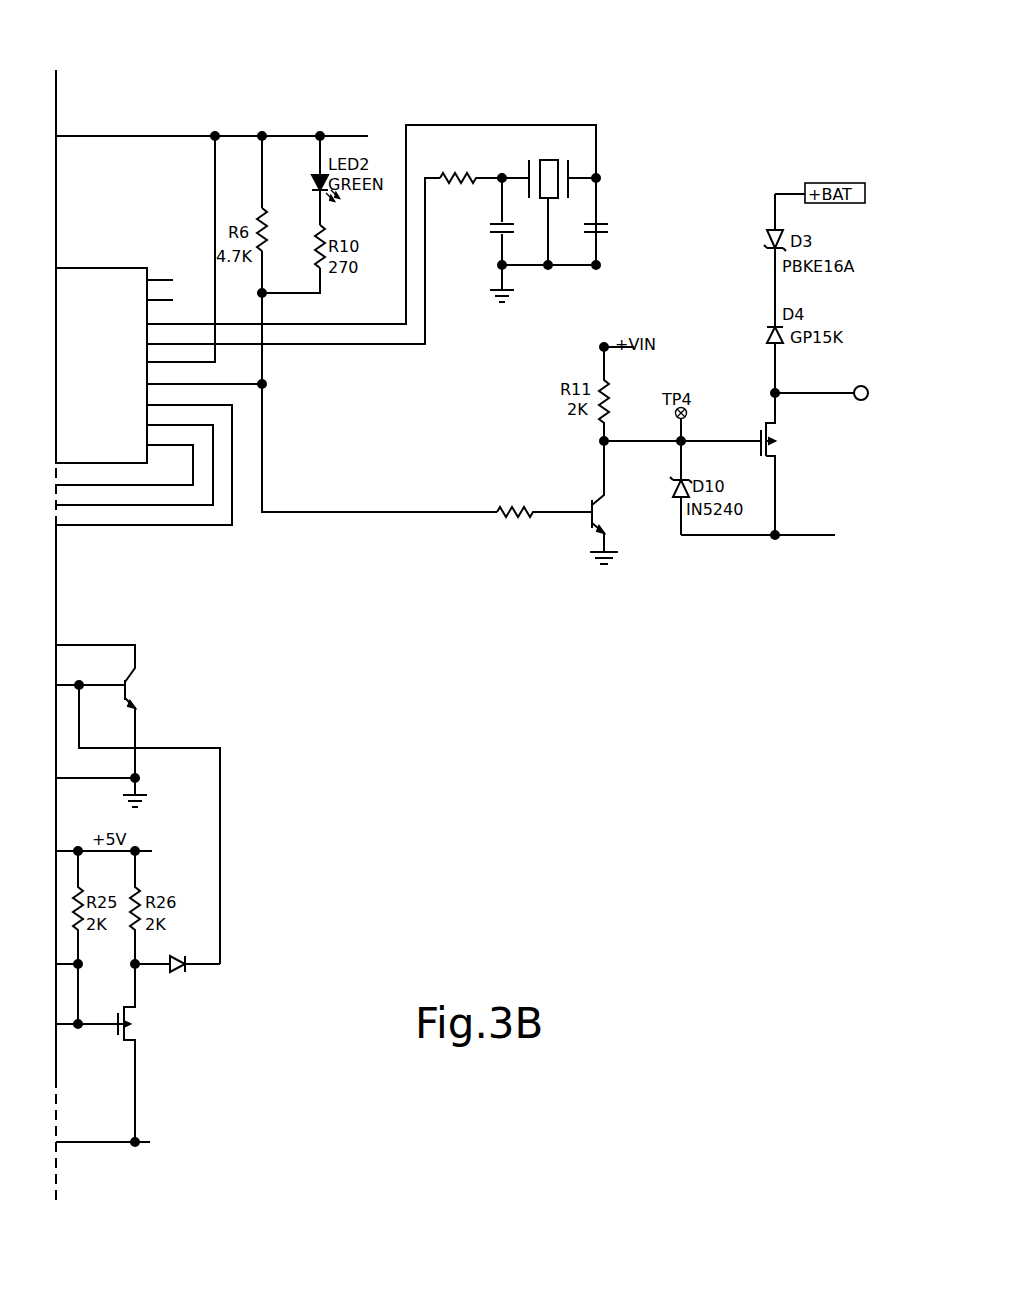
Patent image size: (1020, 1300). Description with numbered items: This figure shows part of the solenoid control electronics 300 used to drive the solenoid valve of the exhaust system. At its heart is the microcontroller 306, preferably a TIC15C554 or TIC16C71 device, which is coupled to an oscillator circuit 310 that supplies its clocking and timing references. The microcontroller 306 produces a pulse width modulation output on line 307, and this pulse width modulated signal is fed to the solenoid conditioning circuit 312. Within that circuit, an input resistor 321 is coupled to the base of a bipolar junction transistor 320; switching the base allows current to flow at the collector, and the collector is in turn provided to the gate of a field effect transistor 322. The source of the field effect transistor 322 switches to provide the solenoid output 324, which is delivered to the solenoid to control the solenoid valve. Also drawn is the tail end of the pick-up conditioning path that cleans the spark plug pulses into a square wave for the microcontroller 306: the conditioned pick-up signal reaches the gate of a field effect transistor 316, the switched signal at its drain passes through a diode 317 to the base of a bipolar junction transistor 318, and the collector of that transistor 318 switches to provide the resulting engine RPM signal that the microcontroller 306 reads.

The solenoid control electronics 300 is at (460, 66).
The microcontroller 306 is at (88, 474).
The pulse width modulation output line 307 is at (190, 384).
The oscillator circuit 310 is at (610, 127).
The solenoid conditioning circuit 312 is at (750, 554).
The field effect transistor 316 is at (169, 1075).
The diode 317 is at (202, 940).
The bipolar junction transistor 318 is at (188, 725).
The bipolar junction transistor 320 is at (585, 537).
The input resistor 321 is at (484, 494).
The field effect transistor 322 is at (749, 421).
The solenoid output 324 is at (861, 386).